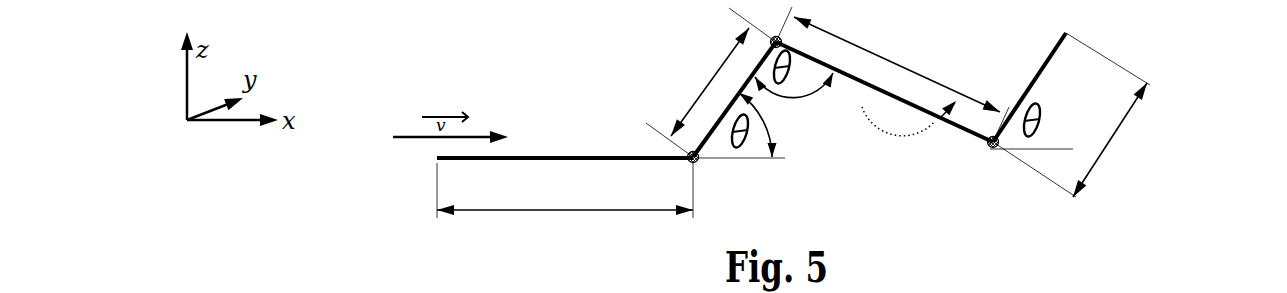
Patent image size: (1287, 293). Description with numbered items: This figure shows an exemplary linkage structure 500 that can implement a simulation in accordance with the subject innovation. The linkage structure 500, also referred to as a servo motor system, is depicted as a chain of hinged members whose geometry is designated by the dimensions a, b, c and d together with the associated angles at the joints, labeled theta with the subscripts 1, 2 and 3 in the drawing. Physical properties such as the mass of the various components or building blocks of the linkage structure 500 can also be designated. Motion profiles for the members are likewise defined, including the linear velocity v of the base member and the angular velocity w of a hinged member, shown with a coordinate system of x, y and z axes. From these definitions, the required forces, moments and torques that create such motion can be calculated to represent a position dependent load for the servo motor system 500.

The linkage structure 500 is at (862, 112).
The first hinge angle theta 1 is at (741, 125).
The second hinge angle theta 2 is at (794, 73).
The third hinge angle theta 3 is at (1031, 125).